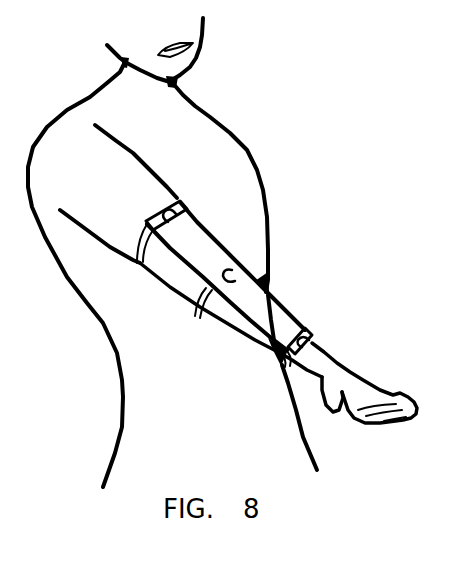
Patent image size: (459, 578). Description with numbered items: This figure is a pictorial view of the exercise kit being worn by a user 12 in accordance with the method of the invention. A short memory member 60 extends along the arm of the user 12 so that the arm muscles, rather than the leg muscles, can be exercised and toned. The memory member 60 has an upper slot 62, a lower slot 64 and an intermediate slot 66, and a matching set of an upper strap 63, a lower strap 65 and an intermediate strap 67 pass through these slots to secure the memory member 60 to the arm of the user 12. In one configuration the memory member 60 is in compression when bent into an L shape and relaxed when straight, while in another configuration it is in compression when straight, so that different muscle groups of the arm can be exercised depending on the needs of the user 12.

The user 12 is at (172, 120).
The memory member 60 is at (193, 228).
The upper slot 62 is at (174, 184).
The upper strap 63 is at (140, 267).
The lower slot 64 is at (315, 323).
The lower strap 65 is at (287, 386).
The intermediate slot 66 is at (253, 255).
The intermediate strap 67 is at (202, 318).